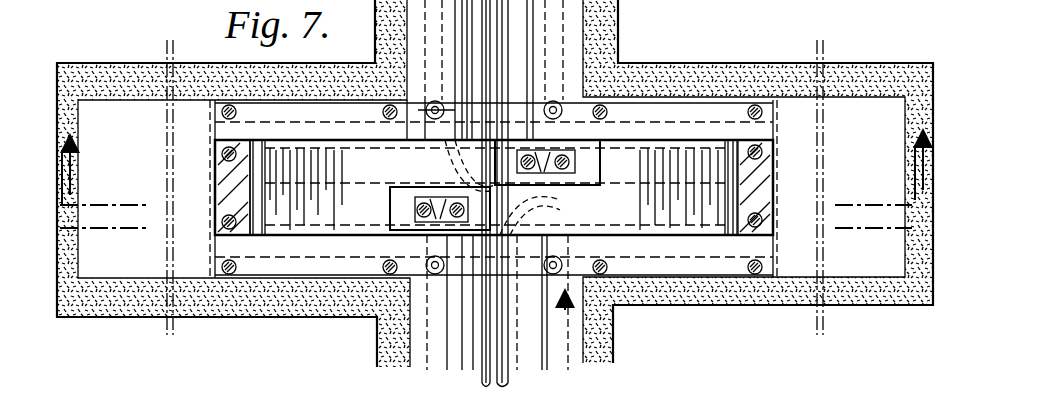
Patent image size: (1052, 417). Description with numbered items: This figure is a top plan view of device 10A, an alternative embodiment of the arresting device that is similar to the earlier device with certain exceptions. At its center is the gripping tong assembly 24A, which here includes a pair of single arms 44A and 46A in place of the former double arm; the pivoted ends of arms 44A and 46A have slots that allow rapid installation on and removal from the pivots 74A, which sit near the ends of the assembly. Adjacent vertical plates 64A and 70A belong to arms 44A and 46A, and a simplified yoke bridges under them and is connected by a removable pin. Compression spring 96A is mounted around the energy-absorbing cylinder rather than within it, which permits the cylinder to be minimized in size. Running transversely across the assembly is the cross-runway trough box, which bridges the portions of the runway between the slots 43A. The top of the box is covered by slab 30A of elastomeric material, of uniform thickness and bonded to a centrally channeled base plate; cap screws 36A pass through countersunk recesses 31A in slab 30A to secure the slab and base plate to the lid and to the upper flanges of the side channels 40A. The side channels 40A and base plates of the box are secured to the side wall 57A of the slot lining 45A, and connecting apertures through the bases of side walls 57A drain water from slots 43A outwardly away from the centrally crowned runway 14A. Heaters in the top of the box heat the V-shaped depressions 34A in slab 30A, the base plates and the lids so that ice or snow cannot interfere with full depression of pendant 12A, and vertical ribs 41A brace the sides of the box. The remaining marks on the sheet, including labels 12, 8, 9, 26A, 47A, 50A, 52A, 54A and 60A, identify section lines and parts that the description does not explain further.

The device 10A is at (728, 60).
The section line 12 is at (400, 352).
The pendant 12A is at (486, 380).
The runway 14A is at (600, 44).
The gripping tong assembly 24A is at (530, 240).
The clamp 26A is at (598, 142).
The slab 30A is at (575, 33).
The countersunk recess 31A is at (445, 120).
The V-shaped depression 34A is at (512, 355).
The cap screw 36A is at (428, 105).
The side channel 40A is at (432, 368).
The vertical rib 41A is at (570, 80).
The slot 43A is at (800, 99).
The arm 44A is at (692, 233).
The slot lining 45A is at (260, 283).
The arm 46A is at (320, 238).
The wall 47A is at (806, 302).
The side wall 50A is at (918, 92).
The housing wall 52A is at (122, 108).
The fastener 54A is at (758, 150).
The side wall 57A is at (720, 100).
The clamp 60A is at (522, 156).
The vertical plate 64A is at (740, 203).
The vertical plate 70A is at (250, 205).
The pivot 74A is at (215, 168).
The compression spring 96A is at (598, 240).
The section line 8 is at (493, 228).
The section line 9 is at (490, 187).